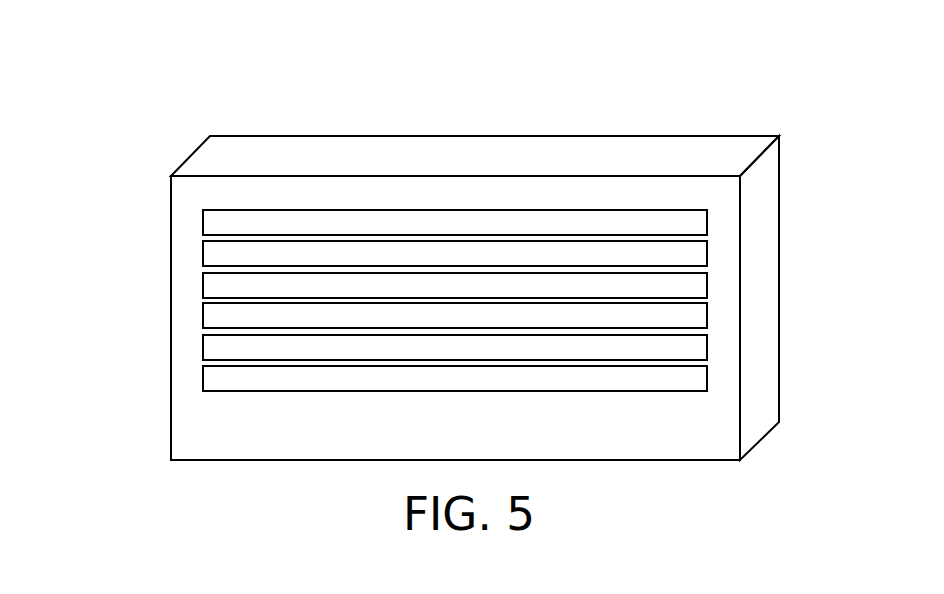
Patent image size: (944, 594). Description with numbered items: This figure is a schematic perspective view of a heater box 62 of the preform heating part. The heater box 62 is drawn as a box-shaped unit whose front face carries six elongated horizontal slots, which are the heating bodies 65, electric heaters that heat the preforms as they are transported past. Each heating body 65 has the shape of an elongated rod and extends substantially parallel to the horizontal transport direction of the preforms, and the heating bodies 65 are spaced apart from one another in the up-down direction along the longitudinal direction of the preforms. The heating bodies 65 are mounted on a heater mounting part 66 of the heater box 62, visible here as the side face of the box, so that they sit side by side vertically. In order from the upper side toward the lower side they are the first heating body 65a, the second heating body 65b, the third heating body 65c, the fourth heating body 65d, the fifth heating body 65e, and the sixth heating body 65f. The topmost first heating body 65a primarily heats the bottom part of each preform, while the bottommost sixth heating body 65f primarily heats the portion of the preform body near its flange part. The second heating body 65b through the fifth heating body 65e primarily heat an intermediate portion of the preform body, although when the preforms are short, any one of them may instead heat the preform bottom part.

The heater box 62 is at (462, 243).
The heater mounting part 66 is at (762, 273).
The heating bodies 65 is at (382, 307).
The first heating body 65a is at (220, 223).
The second heating body 65b is at (220, 254).
The third heating body 65c is at (220, 286).
The fourth heating body 65d is at (220, 316).
The fifth heating body 65e is at (220, 348).
The sixth heating body 65f is at (220, 379).